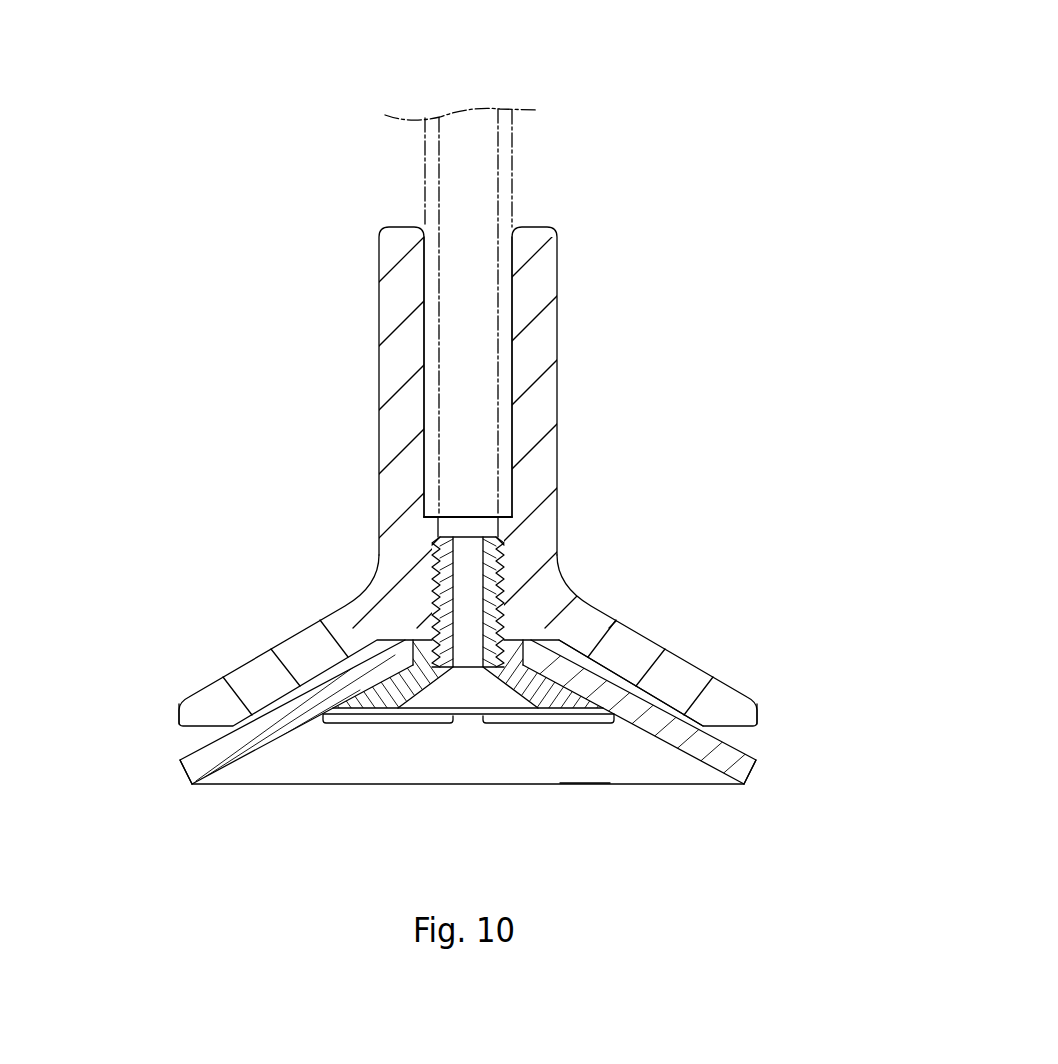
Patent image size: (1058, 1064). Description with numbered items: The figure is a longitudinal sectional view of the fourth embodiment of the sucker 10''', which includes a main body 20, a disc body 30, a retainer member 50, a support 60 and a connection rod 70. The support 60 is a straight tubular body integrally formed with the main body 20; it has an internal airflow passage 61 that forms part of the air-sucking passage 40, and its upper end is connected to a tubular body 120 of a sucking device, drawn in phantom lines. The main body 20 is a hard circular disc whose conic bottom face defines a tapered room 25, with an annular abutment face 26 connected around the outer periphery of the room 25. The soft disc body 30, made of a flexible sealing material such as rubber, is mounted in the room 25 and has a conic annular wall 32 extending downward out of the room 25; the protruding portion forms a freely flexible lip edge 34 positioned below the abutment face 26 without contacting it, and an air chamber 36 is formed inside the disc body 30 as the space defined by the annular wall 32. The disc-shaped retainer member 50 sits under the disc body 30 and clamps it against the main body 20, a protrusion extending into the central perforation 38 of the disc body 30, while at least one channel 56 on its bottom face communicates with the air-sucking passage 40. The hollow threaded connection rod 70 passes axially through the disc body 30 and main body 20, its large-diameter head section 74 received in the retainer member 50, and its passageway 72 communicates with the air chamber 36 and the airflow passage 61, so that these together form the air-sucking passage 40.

The sucker 10''' is at (469, 454).
The tubular body 120 is at (425, 165).
The air-sucking passage 40 is at (475, 365).
The support 60 is at (400, 391).
The airflow passage 61 is at (425, 405).
The main body 20 is at (479, 476).
The room 25 is at (603, 668).
The annular abutment face 26 is at (207, 723).
The connection rod 70 is at (430, 684).
The passageway 72 is at (463, 583).
The large-diameter head section 74 is at (517, 694).
The retainer member 50 is at (373, 732).
The channel 56 is at (343, 724).
The annular wall 32 is at (662, 710).
The perforation 38 is at (413, 657).
The lip edge 34 is at (207, 744).
The disc body 30 is at (468, 822).
The air chamber 36 is at (585, 760).